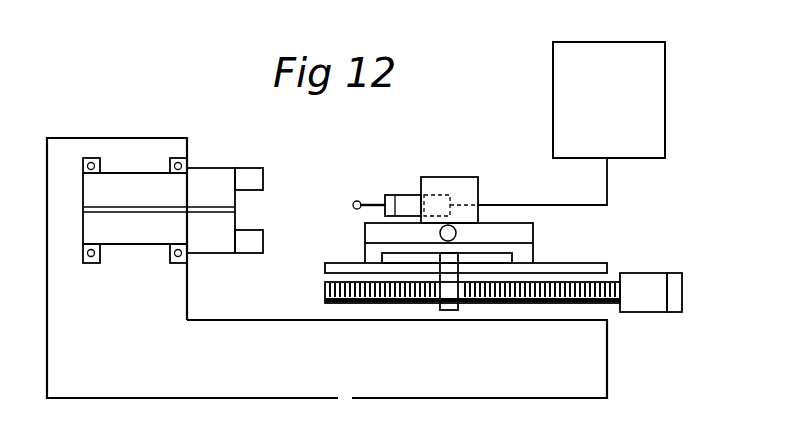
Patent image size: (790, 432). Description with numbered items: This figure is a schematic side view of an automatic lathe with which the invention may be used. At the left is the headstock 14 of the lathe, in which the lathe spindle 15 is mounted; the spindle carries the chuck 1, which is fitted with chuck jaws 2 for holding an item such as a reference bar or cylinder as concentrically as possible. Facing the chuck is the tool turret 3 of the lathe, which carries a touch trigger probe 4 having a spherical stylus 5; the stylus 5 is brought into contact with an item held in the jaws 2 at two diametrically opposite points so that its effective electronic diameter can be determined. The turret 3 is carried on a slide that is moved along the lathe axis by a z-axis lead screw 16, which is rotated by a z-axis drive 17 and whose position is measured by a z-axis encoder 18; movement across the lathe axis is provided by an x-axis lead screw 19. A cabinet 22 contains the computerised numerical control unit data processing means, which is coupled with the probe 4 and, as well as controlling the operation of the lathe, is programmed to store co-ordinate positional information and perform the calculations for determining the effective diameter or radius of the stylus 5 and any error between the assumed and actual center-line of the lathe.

The chuck 1 is at (211, 178).
The chuck jaws 2 is at (250, 175).
The tool turret 3 is at (456, 178).
The touch trigger probe 4 is at (403, 196).
The spherical stylus 5 is at (359, 200).
The headstock 14 is at (117, 145).
The lathe spindle 15 is at (144, 205).
The z-axis lead screw 16 is at (609, 284).
The z-axis drive 17 is at (645, 297).
The z-axis encoder 18 is at (673, 280).
The x-axis lead screw 19 is at (453, 227).
The cabinet 22 is at (560, 103).